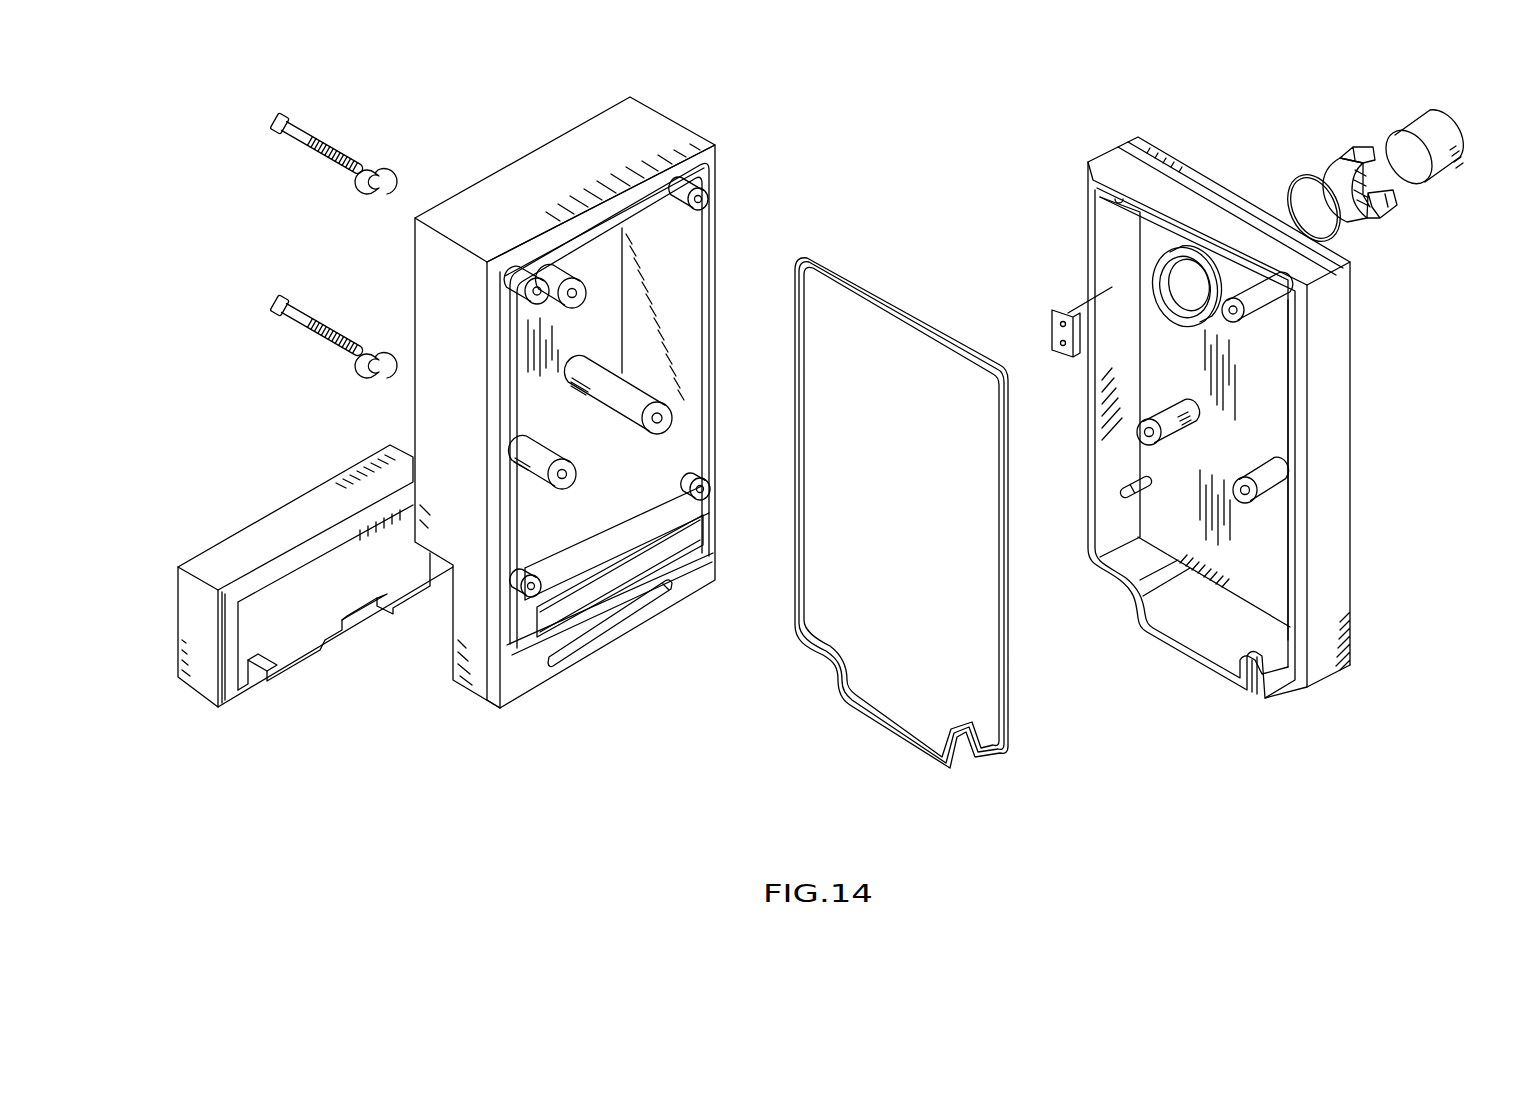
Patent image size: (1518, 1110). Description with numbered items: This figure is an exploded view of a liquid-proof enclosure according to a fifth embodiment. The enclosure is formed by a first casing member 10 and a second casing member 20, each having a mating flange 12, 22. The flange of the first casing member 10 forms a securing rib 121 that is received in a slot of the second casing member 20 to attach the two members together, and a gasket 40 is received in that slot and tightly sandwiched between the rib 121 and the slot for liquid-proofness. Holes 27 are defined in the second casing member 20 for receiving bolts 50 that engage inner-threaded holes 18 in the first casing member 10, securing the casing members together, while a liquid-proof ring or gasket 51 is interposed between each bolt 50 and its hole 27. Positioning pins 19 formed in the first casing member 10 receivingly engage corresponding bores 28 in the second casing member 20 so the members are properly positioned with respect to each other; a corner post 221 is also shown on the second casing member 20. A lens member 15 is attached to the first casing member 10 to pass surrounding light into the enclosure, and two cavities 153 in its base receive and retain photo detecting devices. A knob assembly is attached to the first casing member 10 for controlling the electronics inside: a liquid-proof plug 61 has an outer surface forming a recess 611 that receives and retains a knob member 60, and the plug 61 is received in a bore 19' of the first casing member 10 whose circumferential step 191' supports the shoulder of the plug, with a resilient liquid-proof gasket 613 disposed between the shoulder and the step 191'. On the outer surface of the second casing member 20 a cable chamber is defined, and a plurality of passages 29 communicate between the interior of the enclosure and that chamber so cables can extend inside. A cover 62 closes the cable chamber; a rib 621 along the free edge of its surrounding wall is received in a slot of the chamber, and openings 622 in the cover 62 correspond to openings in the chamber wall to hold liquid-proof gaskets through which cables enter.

The first casing member 10 is at (1340, 582).
The mating flange 12 is at (1309, 328).
The securing rib 121 is at (1297, 440).
The lens member 15 is at (1052, 330).
The cavities 153 is at (1062, 307).
The inner-threaded holes 18 is at (1243, 325).
The positioning pins 19 is at (1085, 481).
The bore 19' is at (1186, 227).
The circumferential step 191' is at (1104, 268).
The second casing member 20 is at (595, 137).
The mating flange 22 is at (587, 212).
The corner post 221 is at (709, 178).
The holes 27 is at (580, 293).
The bores 28 is at (706, 490).
The passages 29 is at (683, 538).
The gasket 40 is at (885, 305).
The bolts 50 is at (279, 118).
The liquid-proof ring or gasket 51 is at (379, 165).
The knob member 60 is at (1446, 135).
The liquid-proof plug 61 is at (1388, 208).
The recess 611 is at (1373, 165).
The resilient liquid-proof gasket 613 is at (1301, 180).
The cover 62 is at (305, 505).
The rib 621 is at (255, 580).
The openings 622 is at (367, 610).